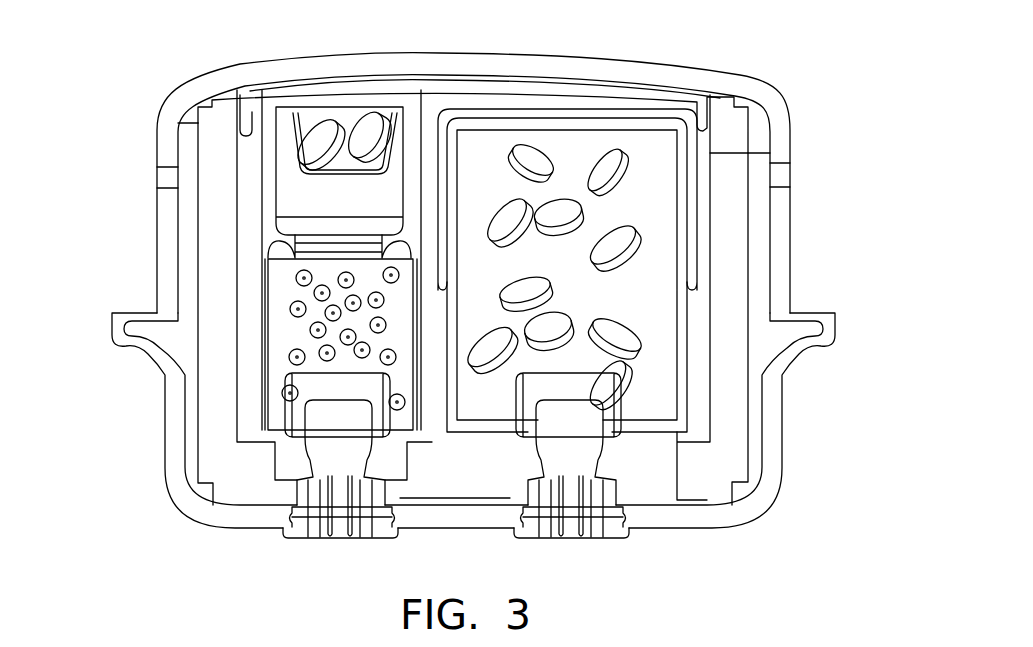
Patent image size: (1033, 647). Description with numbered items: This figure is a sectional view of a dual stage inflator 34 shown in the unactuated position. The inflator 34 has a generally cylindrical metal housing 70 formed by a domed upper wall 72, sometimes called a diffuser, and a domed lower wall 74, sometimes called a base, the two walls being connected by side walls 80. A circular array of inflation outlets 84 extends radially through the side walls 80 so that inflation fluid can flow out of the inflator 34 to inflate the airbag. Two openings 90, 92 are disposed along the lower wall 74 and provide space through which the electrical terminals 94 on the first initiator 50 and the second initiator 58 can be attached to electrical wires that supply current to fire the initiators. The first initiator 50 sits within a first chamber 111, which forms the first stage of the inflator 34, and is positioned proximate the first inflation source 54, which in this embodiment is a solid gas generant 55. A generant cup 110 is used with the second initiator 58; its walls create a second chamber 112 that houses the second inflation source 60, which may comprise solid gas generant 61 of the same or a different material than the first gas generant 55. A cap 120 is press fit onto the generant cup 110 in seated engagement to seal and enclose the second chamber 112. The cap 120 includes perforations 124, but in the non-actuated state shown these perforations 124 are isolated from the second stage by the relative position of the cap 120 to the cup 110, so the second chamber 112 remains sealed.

The inflator 34 is at (773, 70).
The housing 70 is at (780, 120).
The upper wall 72 is at (482, 65).
The lower wall 74 is at (765, 500).
The inflation outlets 84 is at (148, 178).
The side walls 80 is at (163, 247).
The second initiator 58 is at (653, 528).
The second chamber 112 is at (705, 357).
The generant cup 110 is at (680, 395).
The first chamber 111 is at (240, 279).
The solid gas generant 55 is at (290, 360).
The first inflation source 54 is at (370, 127).
The first initiator 50 is at (330, 460).
The opening 90 is at (262, 542).
The opening 92 is at (493, 538).
The electrical terminals 94 is at (330, 537).
The perforations 124 is at (447, 153).
The cap 120 is at (443, 233).
The second inflation source 60 is at (613, 263).
The solid gas generant 61 is at (610, 173).